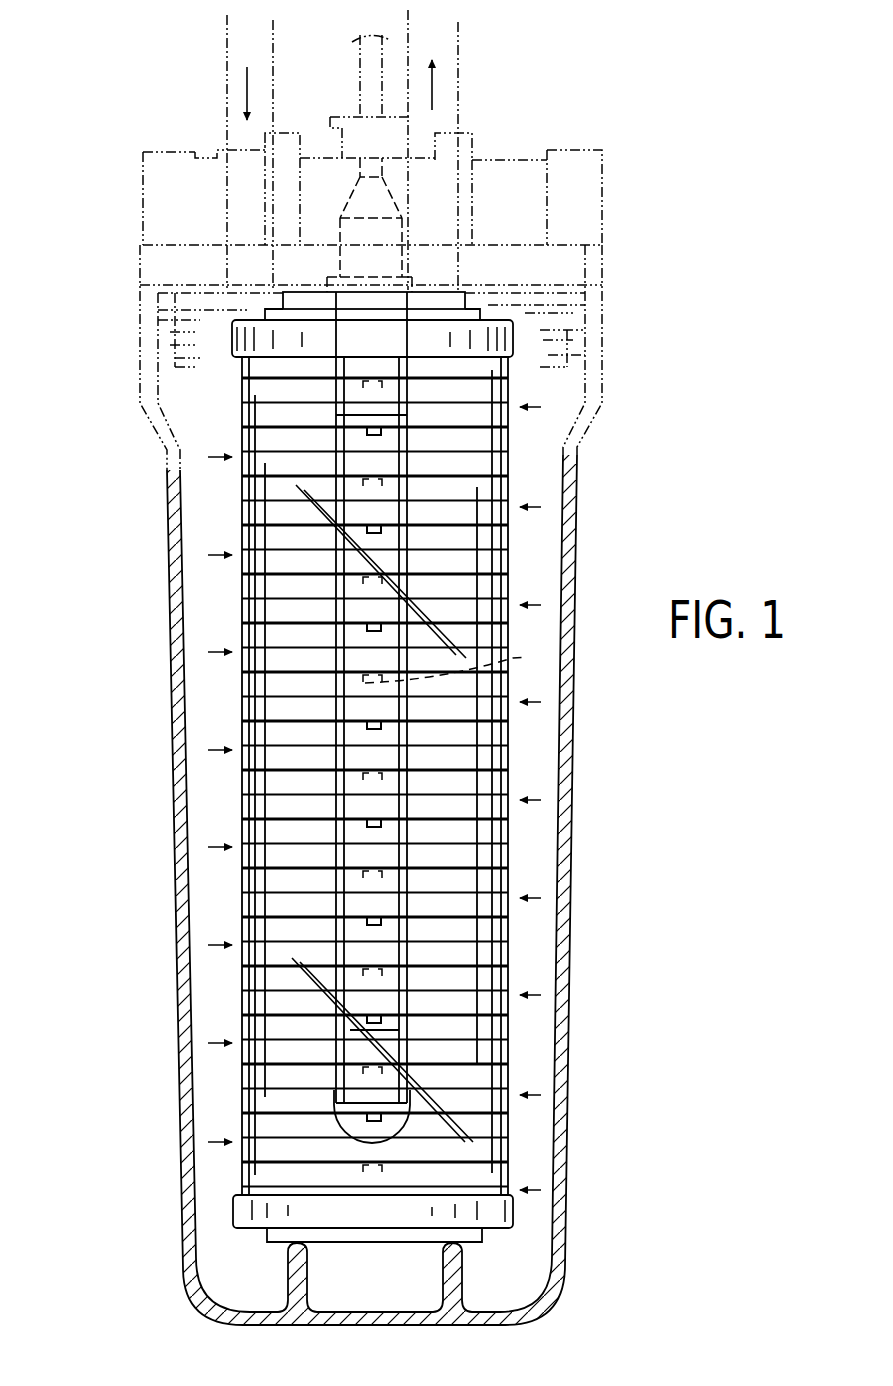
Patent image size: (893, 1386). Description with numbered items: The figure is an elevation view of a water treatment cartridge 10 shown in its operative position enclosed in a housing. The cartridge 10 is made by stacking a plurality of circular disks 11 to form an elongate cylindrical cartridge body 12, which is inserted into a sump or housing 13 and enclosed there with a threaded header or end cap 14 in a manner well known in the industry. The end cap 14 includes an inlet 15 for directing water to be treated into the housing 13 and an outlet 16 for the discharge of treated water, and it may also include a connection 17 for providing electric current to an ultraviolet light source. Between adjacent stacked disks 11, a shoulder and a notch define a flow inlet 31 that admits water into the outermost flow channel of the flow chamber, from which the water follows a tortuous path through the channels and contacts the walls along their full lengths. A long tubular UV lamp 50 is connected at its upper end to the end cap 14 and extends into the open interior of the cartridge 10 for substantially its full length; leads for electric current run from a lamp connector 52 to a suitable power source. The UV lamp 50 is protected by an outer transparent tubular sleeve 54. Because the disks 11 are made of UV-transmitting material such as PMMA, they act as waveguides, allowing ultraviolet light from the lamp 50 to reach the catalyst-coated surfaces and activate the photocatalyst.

The water treatment cartridge 10 is at (530, 775).
The circular disks 11 is at (487, 983).
The cartridge body 12 is at (242, 872).
The housing 13 is at (577, 595).
The end cap 14 is at (491, 168).
The inlet 15 is at (140, 208).
The outlet 16 is at (603, 210).
The connection 17 is at (372, 290).
The flow inlet 31 is at (513, 700).
The UV lamp 50 is at (400, 806).
The lamp connector 52 is at (342, 112).
The outer transparent tubular sleeve 54 is at (333, 928).